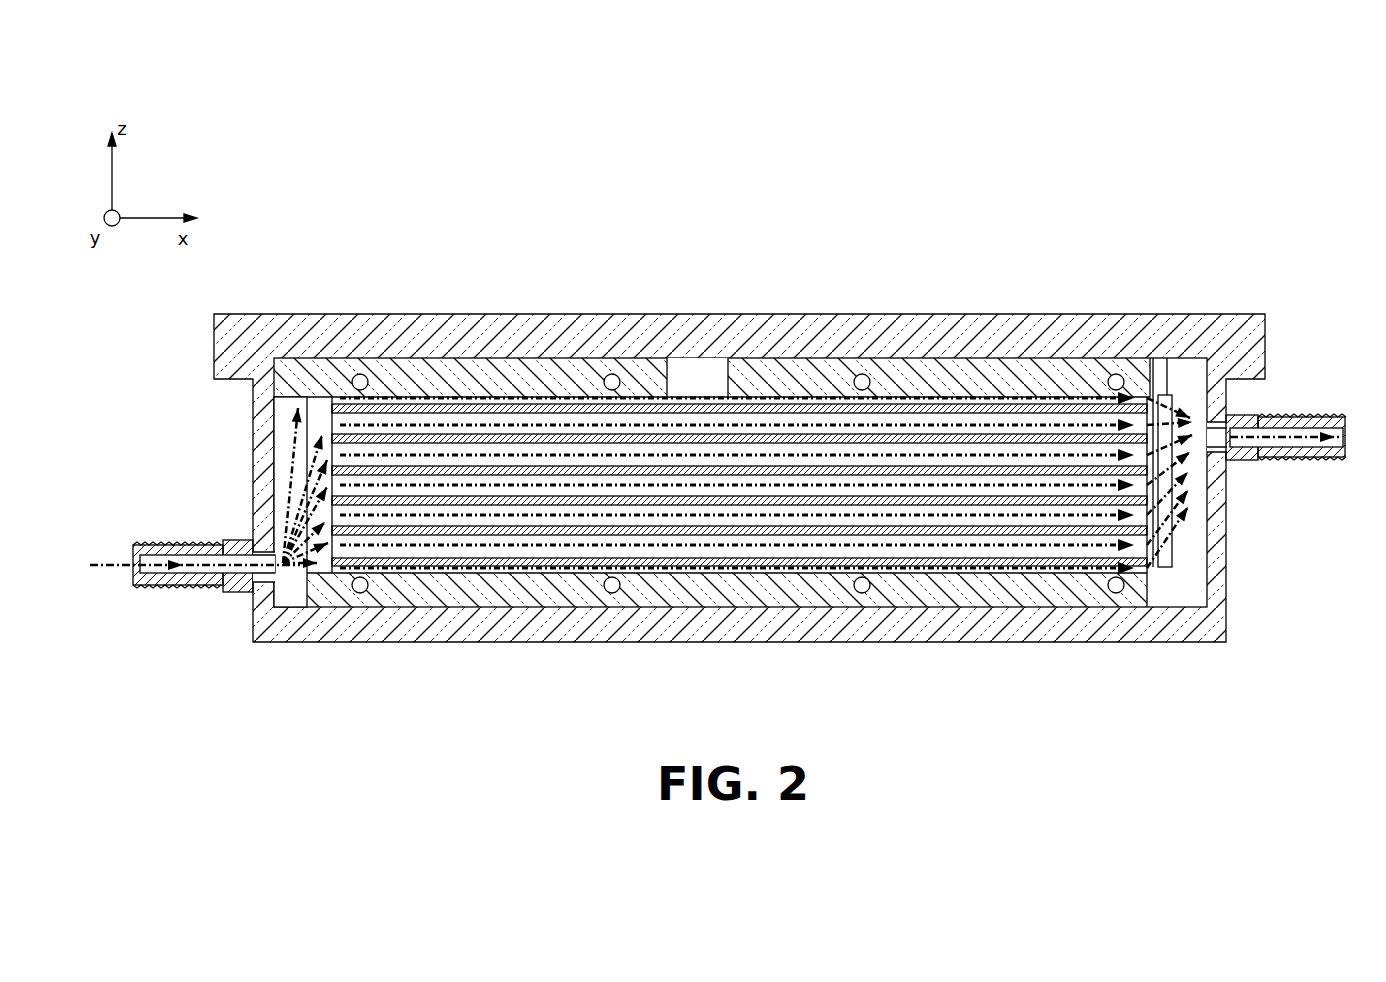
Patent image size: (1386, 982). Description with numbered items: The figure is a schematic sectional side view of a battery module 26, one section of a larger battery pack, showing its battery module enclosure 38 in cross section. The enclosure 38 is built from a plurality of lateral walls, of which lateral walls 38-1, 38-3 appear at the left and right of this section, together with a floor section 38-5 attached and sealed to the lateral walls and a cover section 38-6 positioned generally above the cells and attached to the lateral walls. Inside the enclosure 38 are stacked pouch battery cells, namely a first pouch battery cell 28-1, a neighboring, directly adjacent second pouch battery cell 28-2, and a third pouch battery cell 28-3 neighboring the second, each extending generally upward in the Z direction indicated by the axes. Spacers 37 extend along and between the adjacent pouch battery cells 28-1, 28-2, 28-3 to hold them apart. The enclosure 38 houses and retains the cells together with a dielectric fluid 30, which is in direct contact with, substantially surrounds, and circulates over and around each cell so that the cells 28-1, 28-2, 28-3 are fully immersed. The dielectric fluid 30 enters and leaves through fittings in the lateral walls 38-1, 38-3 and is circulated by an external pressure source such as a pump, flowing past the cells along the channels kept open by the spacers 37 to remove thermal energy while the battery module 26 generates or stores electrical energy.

The battery module 26 is at (717, 428).
The spacers 37 is at (808, 487).
The battery module enclosure 38 is at (757, 475).
The lateral wall 38-1 is at (258, 618).
The lateral wall 38-3 is at (1223, 602).
The floor section 38-5 is at (1010, 635).
The cover section 38-6 is at (1050, 330).
The dielectric fluid 30 is at (113, 568).
The first pouch battery cell 28-1 is at (1074, 588).
The second pouch battery cell 28-2 is at (739, 485).
The third pouch battery cell 28-3 is at (739, 546).